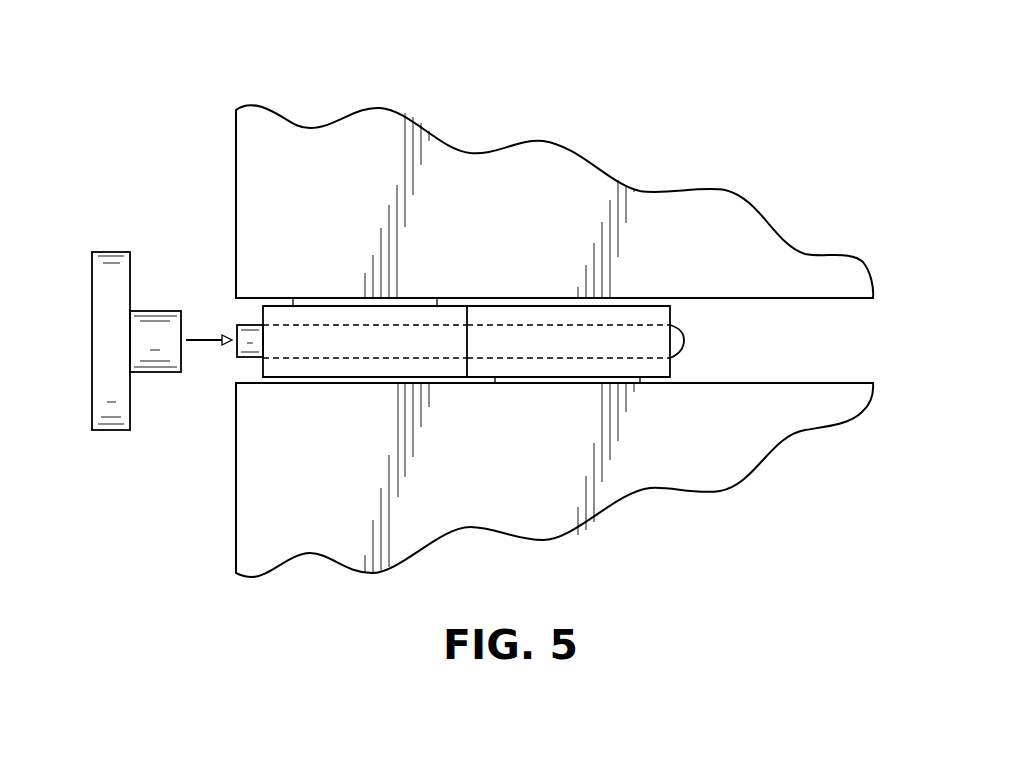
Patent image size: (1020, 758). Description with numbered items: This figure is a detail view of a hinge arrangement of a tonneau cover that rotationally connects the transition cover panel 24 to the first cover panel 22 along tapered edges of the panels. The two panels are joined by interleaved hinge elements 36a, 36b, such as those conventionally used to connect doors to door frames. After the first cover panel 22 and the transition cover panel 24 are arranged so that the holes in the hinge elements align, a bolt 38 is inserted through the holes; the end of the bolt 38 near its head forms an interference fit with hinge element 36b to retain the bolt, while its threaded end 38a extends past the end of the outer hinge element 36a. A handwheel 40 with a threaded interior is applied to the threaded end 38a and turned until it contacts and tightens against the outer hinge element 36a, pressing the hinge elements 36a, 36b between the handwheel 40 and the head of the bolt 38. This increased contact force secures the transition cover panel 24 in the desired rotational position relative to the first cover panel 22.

The first cover panel 22 is at (726, 450).
The transition cover panel 24 is at (723, 259).
The outer hinge element 36a is at (313, 310).
The hinge element 36b is at (539, 310).
The bolt 38 is at (529, 301).
The threaded end 38a is at (240, 358).
The handwheel 40 is at (92, 341).